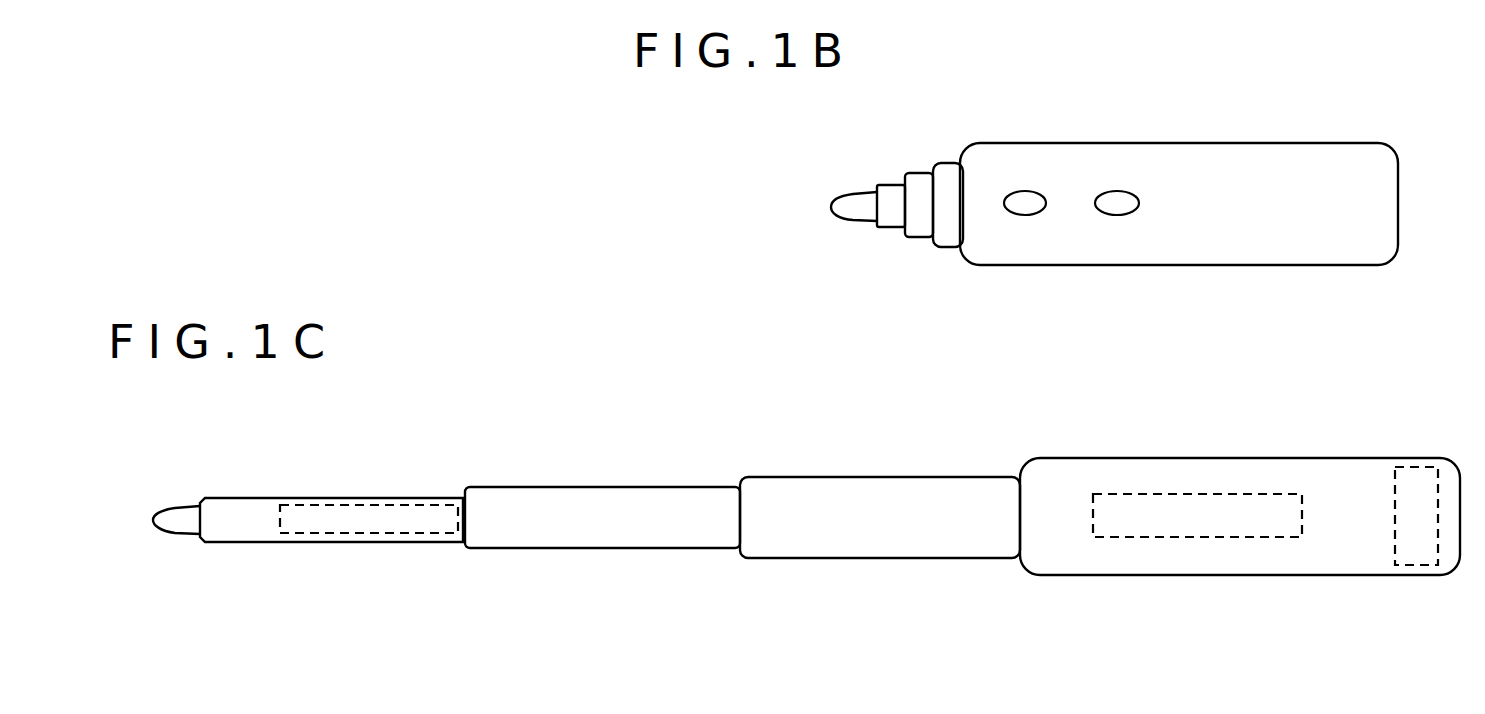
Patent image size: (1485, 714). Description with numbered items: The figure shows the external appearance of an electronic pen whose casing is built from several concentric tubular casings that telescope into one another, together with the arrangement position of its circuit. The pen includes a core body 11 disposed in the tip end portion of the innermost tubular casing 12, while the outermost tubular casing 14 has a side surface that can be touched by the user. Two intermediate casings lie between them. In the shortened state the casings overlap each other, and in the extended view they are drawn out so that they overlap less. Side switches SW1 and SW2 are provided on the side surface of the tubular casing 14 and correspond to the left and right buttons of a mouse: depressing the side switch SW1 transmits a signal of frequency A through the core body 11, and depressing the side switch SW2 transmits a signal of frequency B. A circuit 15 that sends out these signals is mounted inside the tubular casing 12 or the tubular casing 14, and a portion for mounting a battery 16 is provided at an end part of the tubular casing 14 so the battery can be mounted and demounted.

In FIG. 1B, the core body 11 is at (851, 193).
In FIG. 1C, the core body 11 is at (175, 507).
In FIG. 1B, the tubular casing 12 is at (888, 227).
In FIG. 1C, the tubular casing 12 is at (322, 498).
In FIG. 1B, the tubular casing 14 is at (1260, 143).
In FIG. 1C, the tubular casing 14 is at (1277, 458).
In FIG. 1C, the circuit 15 is at (395, 505).
In FIG. 1C, the battery 16 is at (1415, 487).
In FIG. 1B, the side switch SW1 is at (1027, 191).
In FIG. 1B, the side switch SW2 is at (1119, 191).